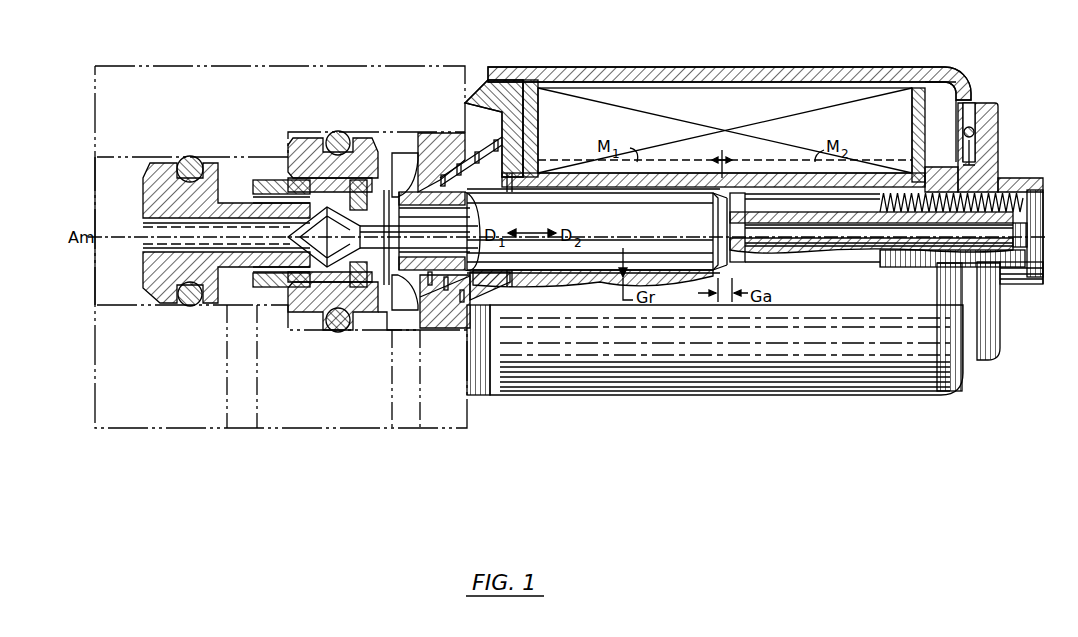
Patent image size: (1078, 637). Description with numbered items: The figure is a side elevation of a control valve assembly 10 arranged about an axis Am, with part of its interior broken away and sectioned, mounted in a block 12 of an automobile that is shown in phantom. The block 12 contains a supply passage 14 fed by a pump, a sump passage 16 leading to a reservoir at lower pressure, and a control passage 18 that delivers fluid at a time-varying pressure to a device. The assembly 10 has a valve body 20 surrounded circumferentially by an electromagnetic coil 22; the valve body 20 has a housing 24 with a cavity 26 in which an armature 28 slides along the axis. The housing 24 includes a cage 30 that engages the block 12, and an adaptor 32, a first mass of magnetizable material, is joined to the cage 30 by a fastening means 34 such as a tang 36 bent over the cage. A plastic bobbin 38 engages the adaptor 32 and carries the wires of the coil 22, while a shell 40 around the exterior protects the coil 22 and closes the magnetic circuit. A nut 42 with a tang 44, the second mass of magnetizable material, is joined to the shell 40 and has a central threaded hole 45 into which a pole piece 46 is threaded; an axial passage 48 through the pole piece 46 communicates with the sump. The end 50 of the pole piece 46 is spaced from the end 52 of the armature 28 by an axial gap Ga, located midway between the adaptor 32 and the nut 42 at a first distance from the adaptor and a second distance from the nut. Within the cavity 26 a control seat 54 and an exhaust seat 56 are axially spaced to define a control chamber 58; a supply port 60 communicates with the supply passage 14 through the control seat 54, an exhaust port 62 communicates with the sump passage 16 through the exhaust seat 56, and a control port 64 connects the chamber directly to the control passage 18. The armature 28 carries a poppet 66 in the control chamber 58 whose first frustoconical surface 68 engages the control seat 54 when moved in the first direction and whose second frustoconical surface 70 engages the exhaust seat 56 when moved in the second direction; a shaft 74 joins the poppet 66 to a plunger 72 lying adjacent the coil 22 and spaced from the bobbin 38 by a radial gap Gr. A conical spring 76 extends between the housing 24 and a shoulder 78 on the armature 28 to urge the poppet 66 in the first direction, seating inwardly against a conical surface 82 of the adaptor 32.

The control valve assembly 10 is at (683, 58).
The block 12 is at (243, 65).
The supply passage 14 is at (106, 178).
The sump passage 16 is at (410, 432).
The control passage 18 is at (238, 432).
The valve body 20 is at (510, 66).
The electromagnetic coil 22 is at (875, 93).
The housing 24 is at (440, 326).
The cavity 26 is at (490, 198).
The armature 28 is at (555, 281).
The cage 30 is at (349, 175).
The adaptor 32 is at (460, 162).
The fastening means 34 is at (487, 79).
The tang 36 is at (491, 107).
The bobbin 38 is at (690, 178).
The shell 40 is at (815, 68).
The nut 42 is at (990, 181).
The tang 44 is at (997, 121).
The threaded hole 45 is at (1044, 202).
The pole piece 46 is at (811, 250).
The passage 48 is at (874, 250).
The end 50 is at (740, 213).
The end 52 is at (716, 229).
The control seat 54 is at (143, 182).
The exhaust seat 56 is at (343, 290).
The control chamber 58 is at (318, 284).
The supply port 60 is at (165, 246).
The exhaust port 62 is at (412, 312).
The control port 64 is at (258, 195).
The poppet 66 is at (338, 232).
The first frustoconical surface 68 is at (292, 241).
The second frustoconical surface 70 is at (386, 262).
The plunger 72 is at (662, 233).
The shaft 74 is at (434, 234).
The spring 76 is at (410, 175).
The shoulder 78 is at (412, 278).
The conical surface 82 is at (466, 165).